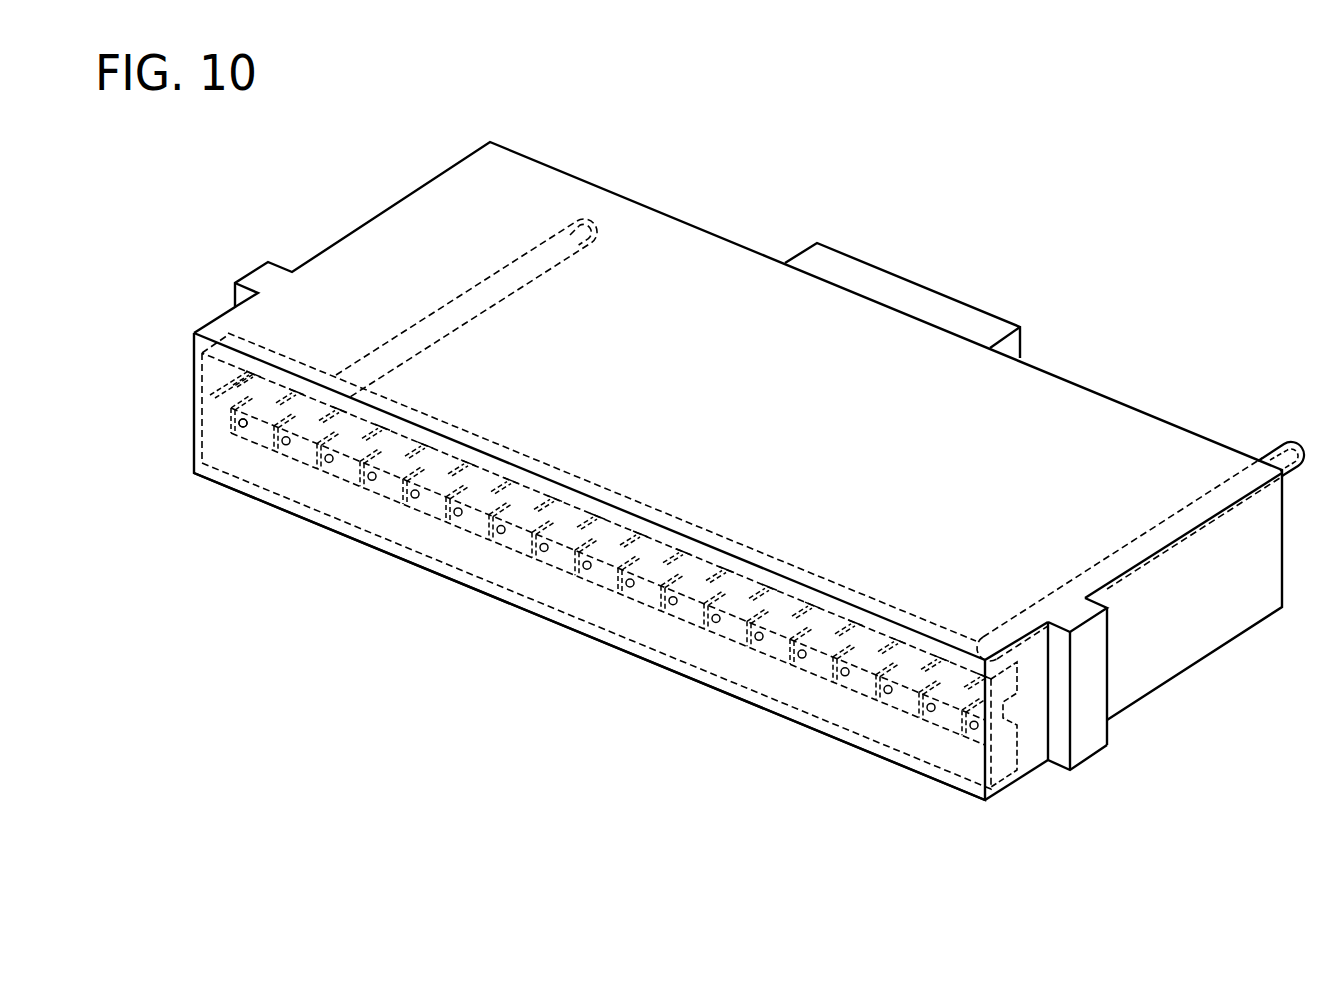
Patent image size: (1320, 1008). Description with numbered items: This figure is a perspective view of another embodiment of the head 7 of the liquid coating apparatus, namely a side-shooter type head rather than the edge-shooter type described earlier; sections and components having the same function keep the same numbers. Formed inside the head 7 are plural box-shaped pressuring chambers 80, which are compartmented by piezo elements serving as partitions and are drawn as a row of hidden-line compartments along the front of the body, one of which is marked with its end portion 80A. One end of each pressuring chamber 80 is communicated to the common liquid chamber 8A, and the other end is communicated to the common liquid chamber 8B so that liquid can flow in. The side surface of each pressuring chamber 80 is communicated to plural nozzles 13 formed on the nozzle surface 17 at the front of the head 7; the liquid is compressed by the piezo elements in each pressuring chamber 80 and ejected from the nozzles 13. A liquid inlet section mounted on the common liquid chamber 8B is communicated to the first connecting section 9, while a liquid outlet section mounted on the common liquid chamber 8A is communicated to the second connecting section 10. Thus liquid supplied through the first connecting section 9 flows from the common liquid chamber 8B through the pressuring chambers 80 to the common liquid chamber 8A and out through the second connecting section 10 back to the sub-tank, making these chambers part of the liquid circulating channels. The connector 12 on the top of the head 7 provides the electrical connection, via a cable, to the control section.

The head 7 is at (695, 697).
The common liquid chamber 8A is at (573, 466).
The common liquid chamber 8B is at (1003, 753).
The first connecting section 9 is at (569, 220).
The second connecting section 10 is at (1291, 443).
The connector 12 is at (909, 281).
The nozzles 13 is at (244, 432).
The nozzle surface 17 is at (352, 536).
The pressuring chamber 80 is at (272, 396).
The contact end portion 80A is at (218, 403).